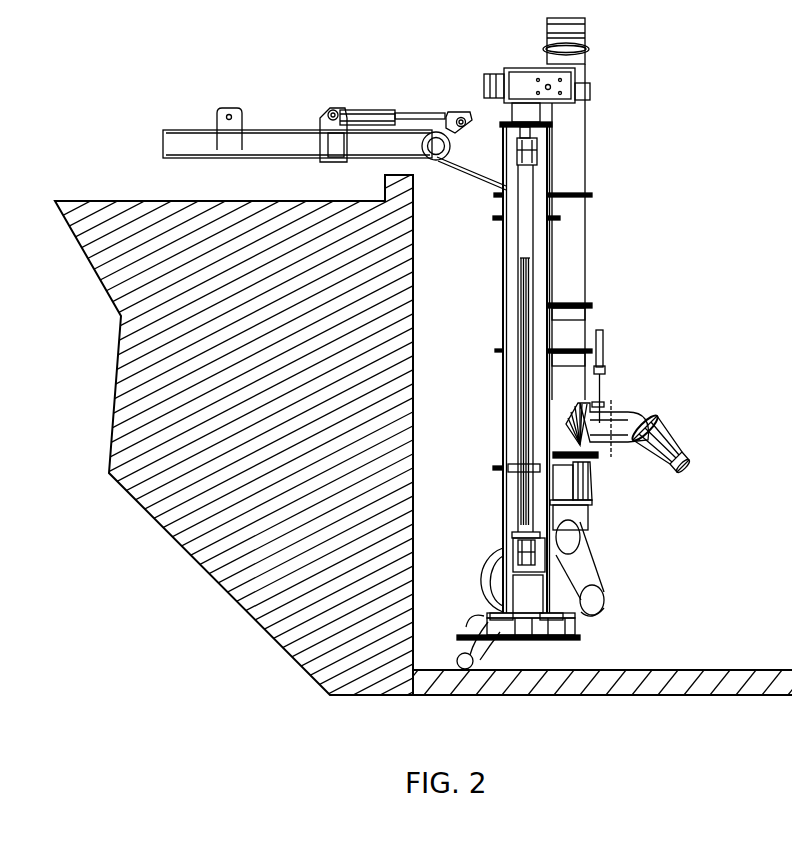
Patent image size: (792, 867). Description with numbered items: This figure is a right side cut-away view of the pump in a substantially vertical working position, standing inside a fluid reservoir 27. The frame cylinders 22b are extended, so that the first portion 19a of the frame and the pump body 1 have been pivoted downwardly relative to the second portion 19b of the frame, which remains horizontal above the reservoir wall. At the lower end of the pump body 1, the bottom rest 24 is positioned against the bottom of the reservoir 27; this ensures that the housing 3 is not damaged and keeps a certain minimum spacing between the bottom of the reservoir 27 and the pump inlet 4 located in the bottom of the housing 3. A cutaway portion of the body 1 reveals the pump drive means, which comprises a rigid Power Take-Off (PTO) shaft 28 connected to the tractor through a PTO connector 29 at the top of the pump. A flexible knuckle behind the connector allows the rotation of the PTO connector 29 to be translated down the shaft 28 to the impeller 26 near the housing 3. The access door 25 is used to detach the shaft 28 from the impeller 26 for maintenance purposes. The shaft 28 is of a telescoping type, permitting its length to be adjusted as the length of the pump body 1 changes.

The pump body 1 is at (566, 340).
The housing 3 is at (569, 614).
The pump inlet 4 is at (554, 653).
The first portion of the frame 19a is at (411, 112).
The second portion of the frame 19b is at (334, 131).
The frame cylinder 22b is at (325, 117).
The bottom rest 24 is at (459, 642).
The access door 25 is at (587, 572).
The impeller 26 is at (575, 632).
The fluid reservoir 27 is at (396, 360).
The Power Take-Off (PTO) shaft 28 is at (482, 348).
The PTO connector 29 is at (506, 60).